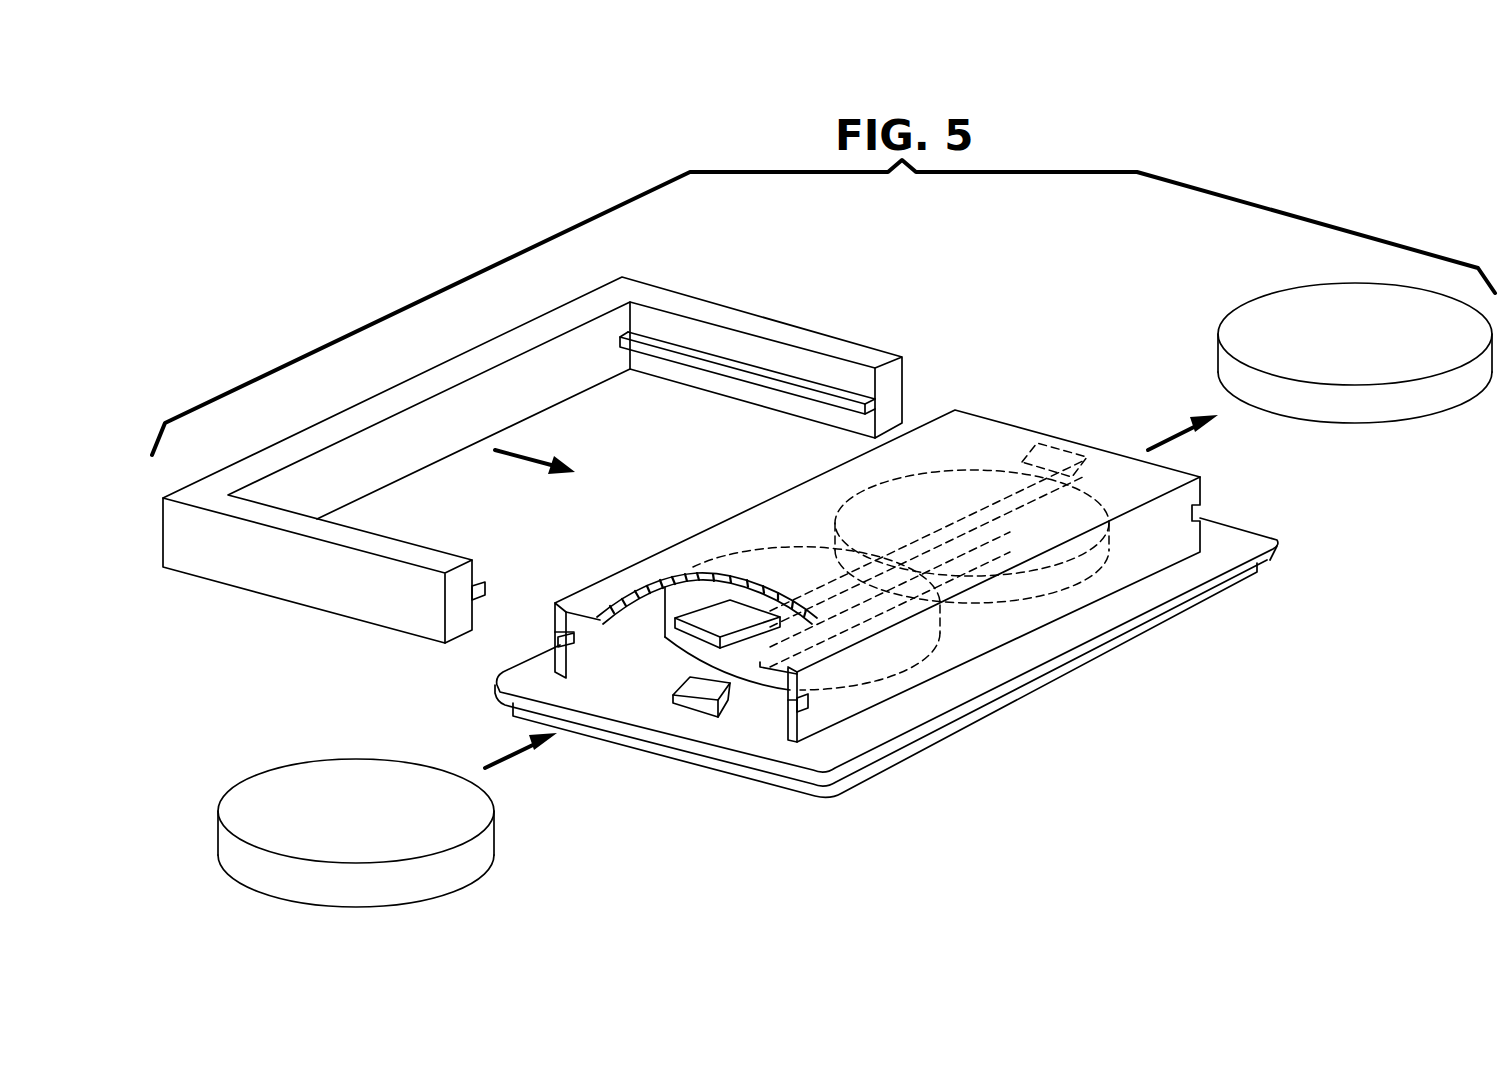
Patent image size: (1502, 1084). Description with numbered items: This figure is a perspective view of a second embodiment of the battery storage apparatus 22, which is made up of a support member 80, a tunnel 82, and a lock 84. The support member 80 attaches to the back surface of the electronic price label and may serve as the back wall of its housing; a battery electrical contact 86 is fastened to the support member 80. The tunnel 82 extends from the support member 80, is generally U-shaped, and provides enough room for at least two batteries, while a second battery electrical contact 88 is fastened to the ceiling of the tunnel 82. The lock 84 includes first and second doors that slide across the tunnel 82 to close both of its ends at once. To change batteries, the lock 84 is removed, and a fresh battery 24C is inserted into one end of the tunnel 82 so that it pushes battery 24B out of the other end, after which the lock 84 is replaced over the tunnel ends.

The battery storage apparatus 22 is at (1010, 286).
The battery 24B is at (1357, 415).
The battery 24C is at (437, 883).
The support member 80 is at (1272, 562).
The tunnel 82 is at (1200, 492).
The lock 84 is at (746, 321).
The battery electrical contact 86 is at (690, 690).
The battery electrical contact 88 is at (1062, 440).